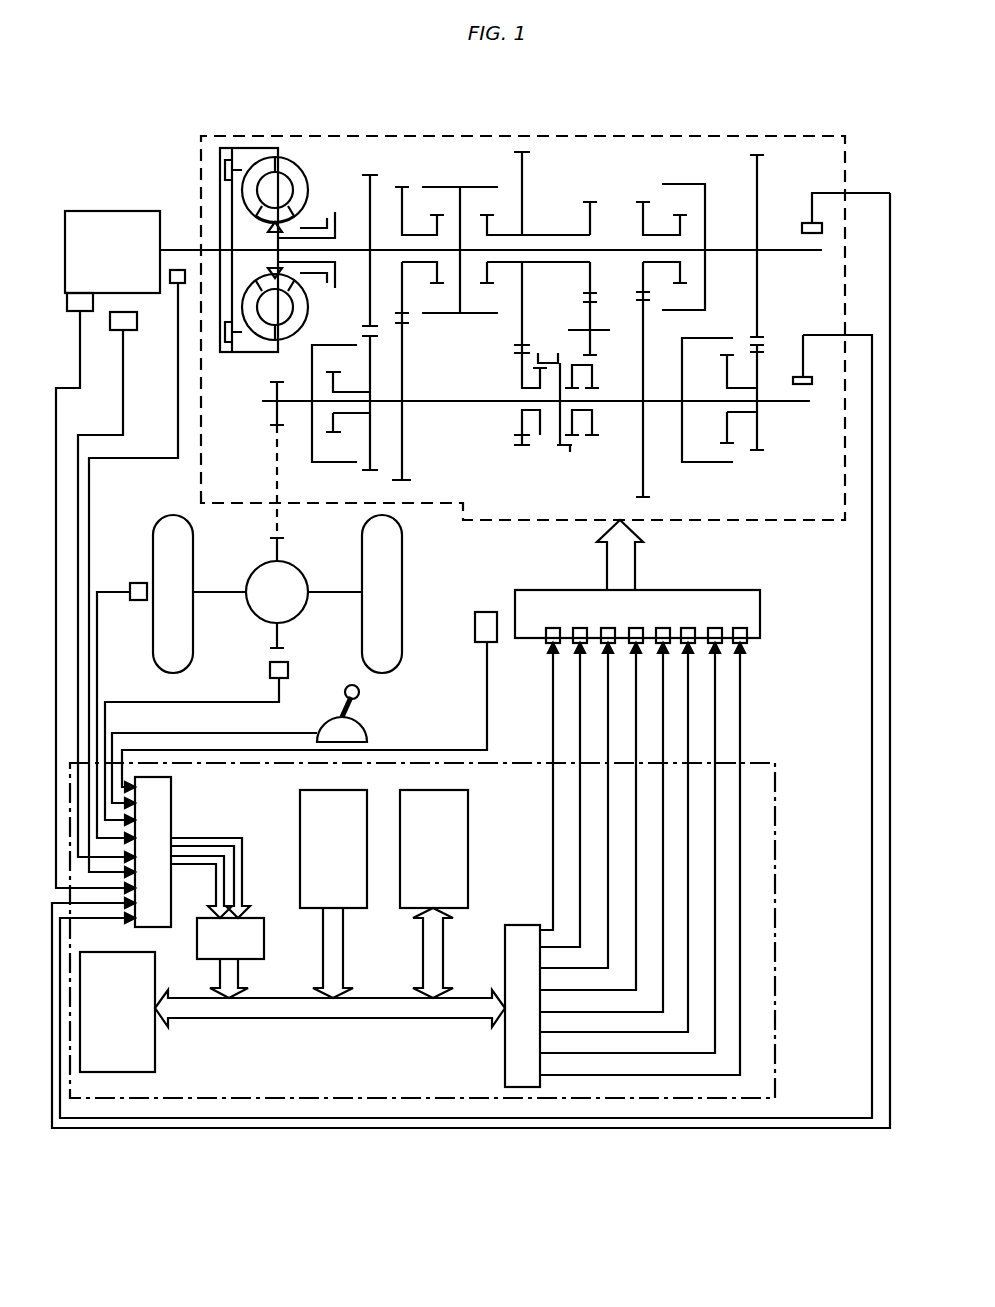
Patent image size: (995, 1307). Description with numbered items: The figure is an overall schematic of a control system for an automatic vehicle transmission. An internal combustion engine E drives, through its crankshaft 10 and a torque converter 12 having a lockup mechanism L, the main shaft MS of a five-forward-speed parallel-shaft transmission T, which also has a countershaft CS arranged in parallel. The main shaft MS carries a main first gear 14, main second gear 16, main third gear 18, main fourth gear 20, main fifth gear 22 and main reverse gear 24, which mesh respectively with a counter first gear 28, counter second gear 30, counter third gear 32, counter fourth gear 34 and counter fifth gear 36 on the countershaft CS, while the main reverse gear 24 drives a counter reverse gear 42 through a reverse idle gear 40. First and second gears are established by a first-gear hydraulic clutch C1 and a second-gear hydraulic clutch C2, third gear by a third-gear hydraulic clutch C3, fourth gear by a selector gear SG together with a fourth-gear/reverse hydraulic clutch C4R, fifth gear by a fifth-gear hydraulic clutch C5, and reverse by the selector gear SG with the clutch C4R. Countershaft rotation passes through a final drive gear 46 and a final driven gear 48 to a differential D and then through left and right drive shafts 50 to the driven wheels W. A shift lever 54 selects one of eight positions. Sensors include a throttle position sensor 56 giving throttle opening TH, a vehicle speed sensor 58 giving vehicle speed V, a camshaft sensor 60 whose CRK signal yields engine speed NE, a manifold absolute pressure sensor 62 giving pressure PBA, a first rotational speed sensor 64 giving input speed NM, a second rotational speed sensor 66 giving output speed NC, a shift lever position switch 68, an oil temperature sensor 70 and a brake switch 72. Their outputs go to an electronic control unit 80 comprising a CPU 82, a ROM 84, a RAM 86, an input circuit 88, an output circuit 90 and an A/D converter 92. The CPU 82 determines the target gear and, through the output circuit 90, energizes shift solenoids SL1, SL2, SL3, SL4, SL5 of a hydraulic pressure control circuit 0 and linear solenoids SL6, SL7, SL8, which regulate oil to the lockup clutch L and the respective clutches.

The crankshaft 10 is at (172, 249).
The torque converter 12 is at (290, 150).
The main first gear 14 is at (643, 202).
The main second gear 16 is at (402, 187).
The main third gear 18 is at (369, 175).
The main fourth gear 20 is at (522, 152).
The main fifth gear 22 is at (757, 155).
The main reverse gear 24 is at (590, 202).
The counter first gear 28 is at (650, 498).
The counter second gear 30 is at (410, 481).
The counter third gear 32 is at (370, 471).
The counter fourth gear 34 is at (522, 446).
The counter fifth gear 36 is at (758, 452).
The reverse idle gear 40 is at (583, 298).
The counter reverse gear 42 is at (592, 437).
The final drive gear 46 is at (270, 410).
The final driven gear 48 is at (272, 539).
The drive shaft 50 is at (216, 592).
The shift lever 54 is at (366, 704).
The throttle position sensor 56 is at (128, 331).
The vehicle speed sensor 58 is at (288, 670).
The camshaft sensor 60 is at (178, 284).
The manifold absolute pressure sensor 62 is at (85, 312).
The first rotational speed sensor 64 is at (810, 222).
The second rotational speed sensor 66 is at (800, 377).
The shift lever position switch 68 is at (367, 729).
The oil temperature sensor 70 is at (475, 627).
The brake switch 72 is at (138, 601).
The electronic control unit 80 is at (775, 852).
The CPU 82 is at (155, 976).
The ROM 84 is at (300, 825).
The RAM 86 is at (468, 825).
The input circuit 88 is at (171, 810).
The output circuit 90 is at (505, 1066).
The A/D converter 92 is at (264, 942).
The hydraulic pressure control circuit 0 is at (760, 598).
The internal combustion engine E is at (97, 211).
The automatic vehicle transmission T is at (579, 136).
The lockup mechanism L is at (230, 148).
The main shaft MS is at (792, 251).
The countershaft CS is at (800, 402).
The first-gear hydraulic clutch C1 is at (686, 184).
The second-gear hydraulic clutch C2 is at (430, 187).
The third-gear hydraulic clutch C3 is at (330, 463).
The fourth-gear/reverse hydraulic clutch C4R is at (480, 187).
The fifth-gear hydraulic clutch C5 is at (700, 463).
The selector gear SG is at (561, 453).
The differential D is at (300, 577).
The driven wheel W is at (153, 560).
The vehicle traveling speed V is at (237, 692).
The input rotational speed NM is at (471, 647).
The output rotational speed NC is at (466, 714).
The engine speed NE is at (154, 443).
The throttle valve opening TH is at (95, 420).
The manifold absolute pressure PBA is at (60, 373).
The shift solenoid SL1 is at (550, 628).
The shift solenoid SL2 is at (577, 628).
The shift solenoid SL3 is at (606, 644).
The shift solenoid SL4 is at (633, 644).
The shift solenoid SL5 is at (666, 644).
The linear solenoid SL6 is at (690, 628).
The linear solenoid SL7 is at (716, 628).
The linear solenoid SL8 is at (742, 628).